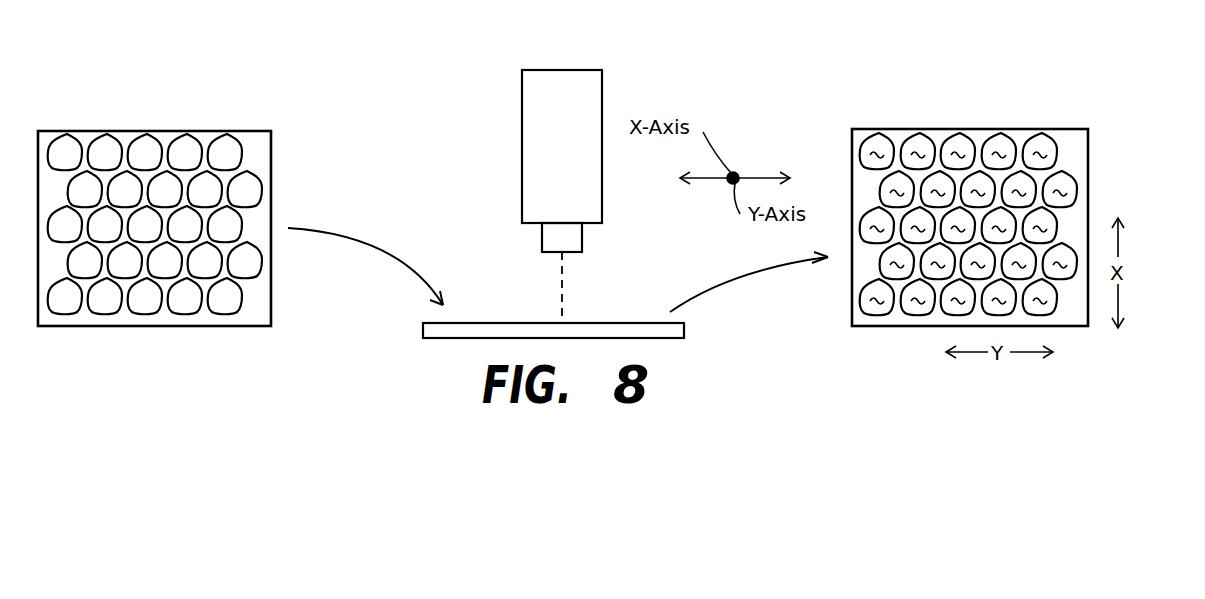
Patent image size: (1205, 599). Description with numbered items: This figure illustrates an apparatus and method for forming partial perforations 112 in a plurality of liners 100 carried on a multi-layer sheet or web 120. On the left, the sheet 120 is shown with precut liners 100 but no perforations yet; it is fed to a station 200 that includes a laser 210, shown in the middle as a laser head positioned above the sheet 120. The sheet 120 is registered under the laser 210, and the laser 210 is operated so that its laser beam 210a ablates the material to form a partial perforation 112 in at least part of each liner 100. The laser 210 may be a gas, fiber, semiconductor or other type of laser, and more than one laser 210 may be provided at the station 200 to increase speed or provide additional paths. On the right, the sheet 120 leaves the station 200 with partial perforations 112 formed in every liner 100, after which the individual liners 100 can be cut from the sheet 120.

The liner 100 is at (1022, 200).
The partial perforation 112 is at (1041, 154).
The multi-layer sheet 120 is at (140, 327).
The station 200 is at (552, 169).
The laser 210 is at (603, 114).
The laser beam 210a is at (562, 300).